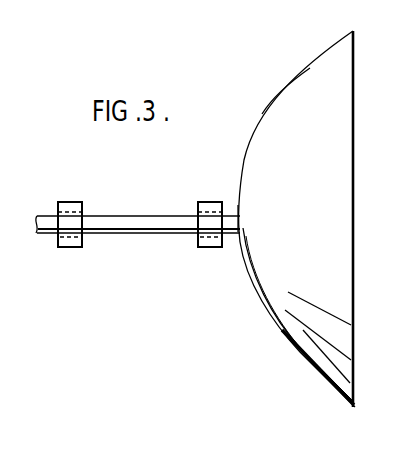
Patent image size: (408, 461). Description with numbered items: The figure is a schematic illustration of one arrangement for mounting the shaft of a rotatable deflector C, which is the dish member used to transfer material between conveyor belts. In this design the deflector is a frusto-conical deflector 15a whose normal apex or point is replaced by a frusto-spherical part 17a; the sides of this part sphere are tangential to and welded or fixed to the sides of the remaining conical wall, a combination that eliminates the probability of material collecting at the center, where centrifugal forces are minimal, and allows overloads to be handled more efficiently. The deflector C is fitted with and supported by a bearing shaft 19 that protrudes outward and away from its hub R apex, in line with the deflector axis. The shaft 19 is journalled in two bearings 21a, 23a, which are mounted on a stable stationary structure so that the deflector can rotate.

The frusto-conical deflector 15a is at (310, 68).
The deflector C is at (263, 116).
The hub R is at (240, 221).
The frusto-spherical part 17a is at (248, 287).
The shaft 19 is at (133, 215).
The bearing 21a is at (72, 248).
The bearing 23a is at (207, 248).